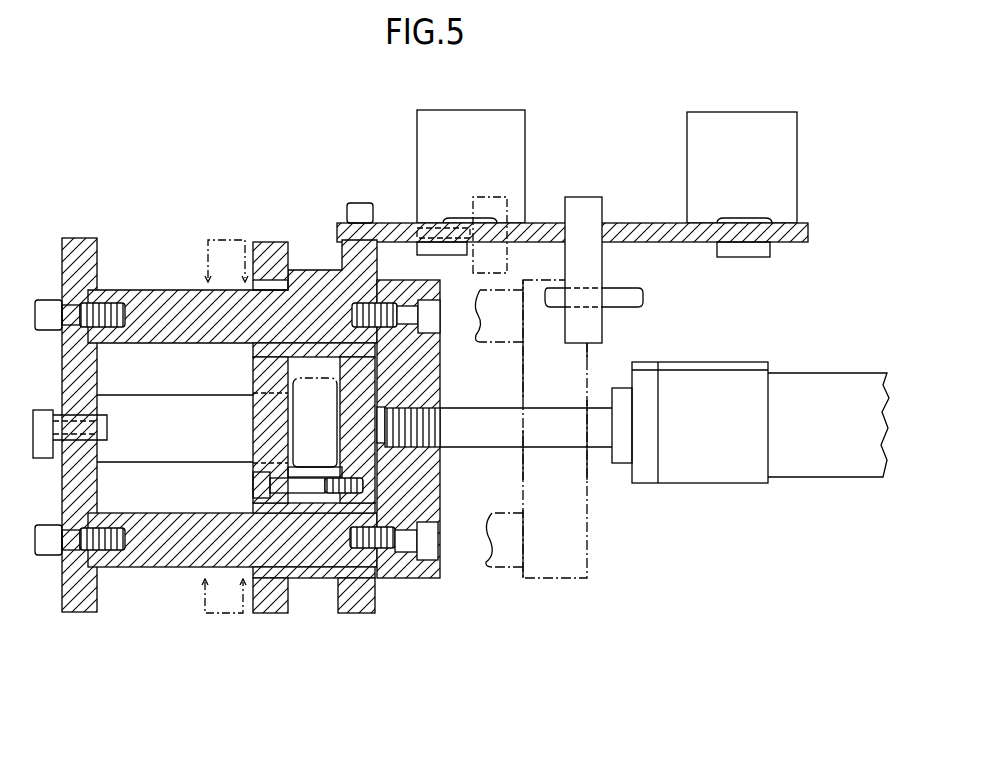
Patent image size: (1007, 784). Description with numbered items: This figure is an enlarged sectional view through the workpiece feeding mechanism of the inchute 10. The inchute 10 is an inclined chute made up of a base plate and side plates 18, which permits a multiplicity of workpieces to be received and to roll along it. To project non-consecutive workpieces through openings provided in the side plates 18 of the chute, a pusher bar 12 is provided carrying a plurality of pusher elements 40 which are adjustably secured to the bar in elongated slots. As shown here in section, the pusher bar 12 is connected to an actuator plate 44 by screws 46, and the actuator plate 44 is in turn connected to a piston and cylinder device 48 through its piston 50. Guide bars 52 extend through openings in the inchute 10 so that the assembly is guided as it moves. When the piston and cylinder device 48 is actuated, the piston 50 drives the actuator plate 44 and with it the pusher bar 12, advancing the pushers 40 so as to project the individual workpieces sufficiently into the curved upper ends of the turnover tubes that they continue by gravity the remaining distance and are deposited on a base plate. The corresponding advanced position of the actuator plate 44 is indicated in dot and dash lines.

The inchute 10 is at (292, 214).
The pusher bar 12 is at (84, 258).
The side plates 18 is at (288, 596).
The pusher elements 40 is at (166, 462).
The actuator plate 44 is at (430, 580).
The screws 46 is at (425, 537).
The piston and cylinder device 48 is at (708, 385).
The piston 50 is at (545, 408).
The guide bars 52 is at (152, 300).